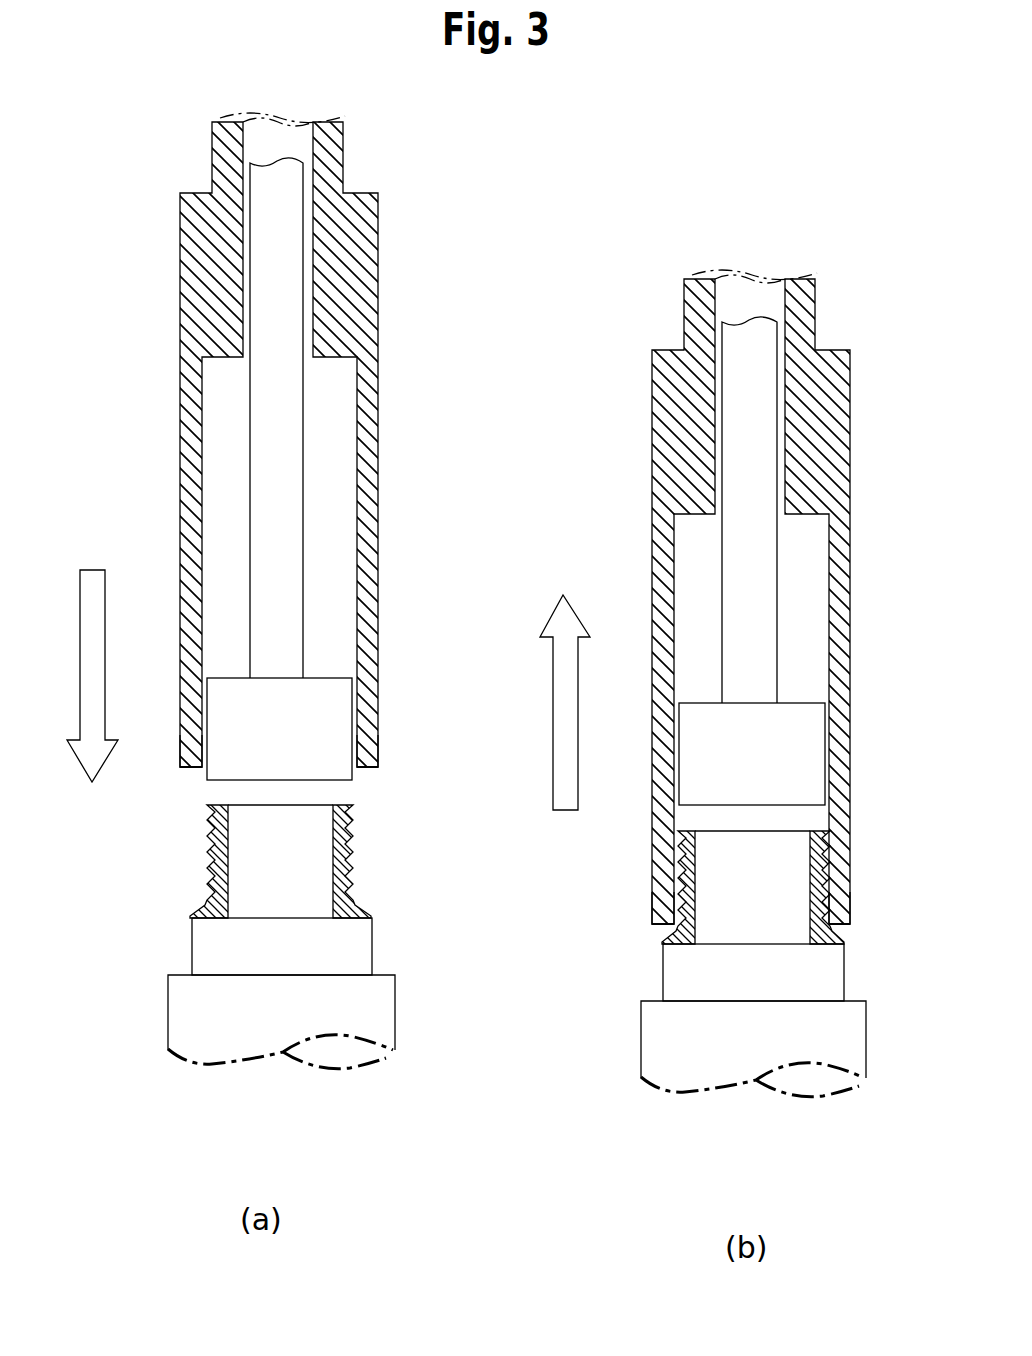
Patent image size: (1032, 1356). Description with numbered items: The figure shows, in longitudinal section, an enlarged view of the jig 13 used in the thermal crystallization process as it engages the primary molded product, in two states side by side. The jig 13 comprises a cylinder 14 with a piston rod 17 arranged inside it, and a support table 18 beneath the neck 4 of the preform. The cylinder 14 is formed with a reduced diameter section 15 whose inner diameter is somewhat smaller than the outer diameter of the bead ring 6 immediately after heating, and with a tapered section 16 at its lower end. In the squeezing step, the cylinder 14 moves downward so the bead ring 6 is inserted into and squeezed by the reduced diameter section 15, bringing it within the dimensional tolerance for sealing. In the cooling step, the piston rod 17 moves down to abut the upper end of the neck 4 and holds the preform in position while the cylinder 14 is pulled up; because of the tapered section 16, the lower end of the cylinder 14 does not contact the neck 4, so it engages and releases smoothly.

The jig 13 is at (162, 278).
The cylinder 14 is at (180, 418).
The reduced diameter section 15 is at (188, 745).
The tapered section 16 is at (200, 772).
The piston rod 17 is at (318, 693).
The bead ring 6 is at (350, 878).
The neck 4 is at (190, 872).
The support table 18 is at (200, 1013).